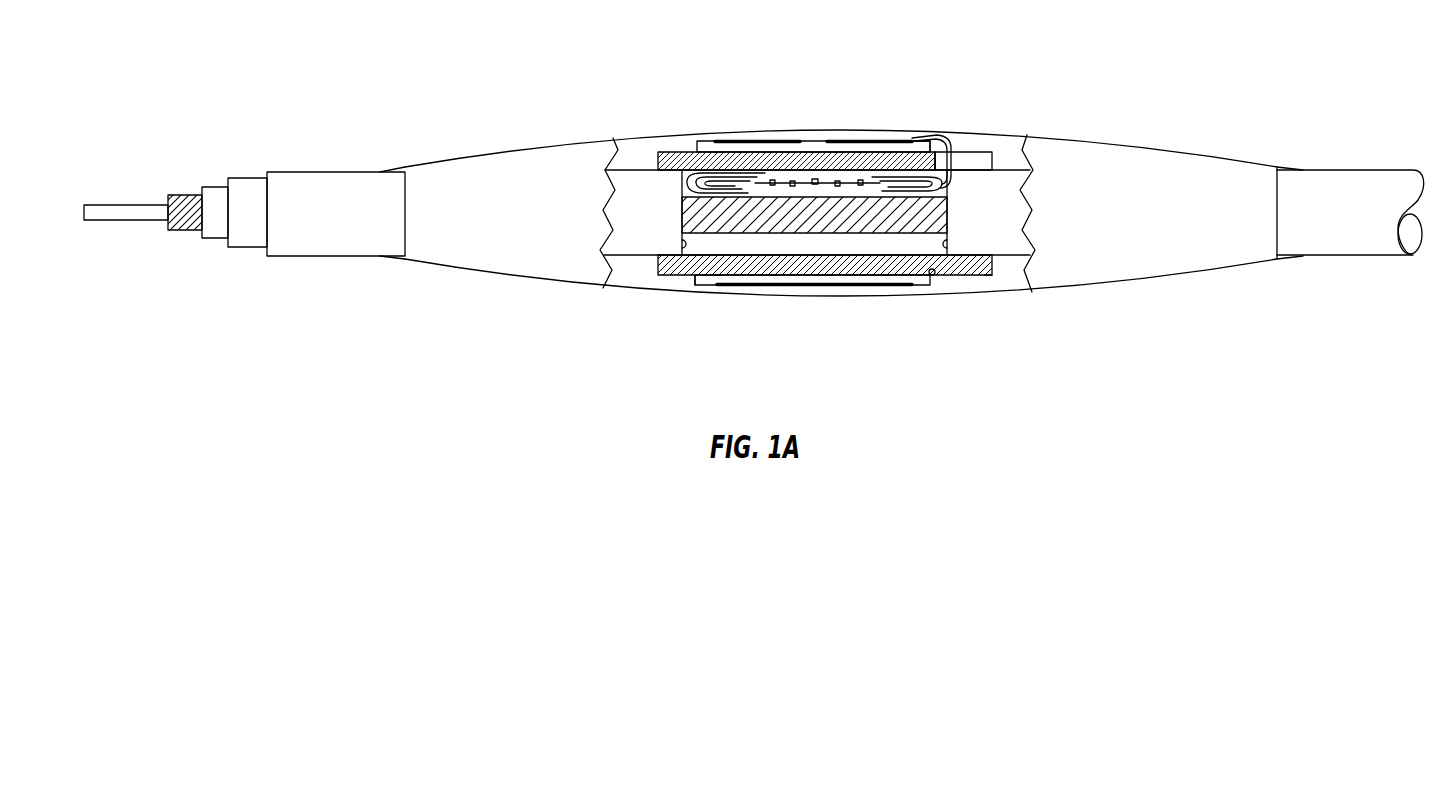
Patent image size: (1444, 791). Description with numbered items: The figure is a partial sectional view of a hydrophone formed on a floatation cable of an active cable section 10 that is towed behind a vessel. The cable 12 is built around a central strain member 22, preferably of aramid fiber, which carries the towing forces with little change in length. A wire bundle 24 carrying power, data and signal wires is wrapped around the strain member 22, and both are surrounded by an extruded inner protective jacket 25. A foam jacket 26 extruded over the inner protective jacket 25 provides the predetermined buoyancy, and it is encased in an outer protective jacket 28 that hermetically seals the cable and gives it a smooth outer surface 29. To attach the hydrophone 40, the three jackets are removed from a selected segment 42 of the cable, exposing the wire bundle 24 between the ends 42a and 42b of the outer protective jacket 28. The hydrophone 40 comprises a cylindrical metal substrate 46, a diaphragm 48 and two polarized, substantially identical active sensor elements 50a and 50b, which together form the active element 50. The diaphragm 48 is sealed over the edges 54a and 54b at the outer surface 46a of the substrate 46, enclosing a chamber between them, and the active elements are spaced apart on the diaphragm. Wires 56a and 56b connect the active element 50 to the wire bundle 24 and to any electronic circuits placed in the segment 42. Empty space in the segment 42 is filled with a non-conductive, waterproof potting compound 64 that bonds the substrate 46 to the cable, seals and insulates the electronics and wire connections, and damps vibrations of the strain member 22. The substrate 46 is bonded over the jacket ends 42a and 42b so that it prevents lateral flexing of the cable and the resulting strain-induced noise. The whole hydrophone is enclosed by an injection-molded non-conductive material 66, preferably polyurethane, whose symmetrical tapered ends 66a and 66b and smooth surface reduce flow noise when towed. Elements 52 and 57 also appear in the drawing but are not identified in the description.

The active cable section 10 is at (1072, 66).
The cable 12 is at (1342, 157).
The central strain member 22 is at (108, 203).
The wire bundle 24 is at (185, 193).
The inner protective jacket 25 is at (215, 242).
The foam jacket 26 is at (247, 177).
The outer protective jacket 28 is at (320, 225).
The smooth outer surface 29 is at (323, 170).
The hydrophone 40 is at (763, 288).
The selected segment 42 is at (843, 245).
The end of outer jacket 42a is at (682, 236).
The end of outer jacket 42b is at (947, 236).
The substrate 46 is at (952, 265).
The outer surface of substrate 46a is at (987, 275).
The diaphragm 48 is at (813, 139).
The active element 50 is at (837, 139).
The active sensor element 50a is at (767, 140).
The active sensor element 50b is at (850, 140).
The bottom plate 52 is at (837, 277).
The edge 54a is at (692, 276).
The edge 54b is at (934, 275).
The wire 56a is at (937, 189).
The wire 56b is at (933, 130).
The wire lead 57 is at (693, 182).
The potting compound 64 is at (717, 245).
The non-conductive material 66 is at (1145, 226).
The tapered end 66a is at (548, 140).
The tapered end 66b is at (1132, 140).